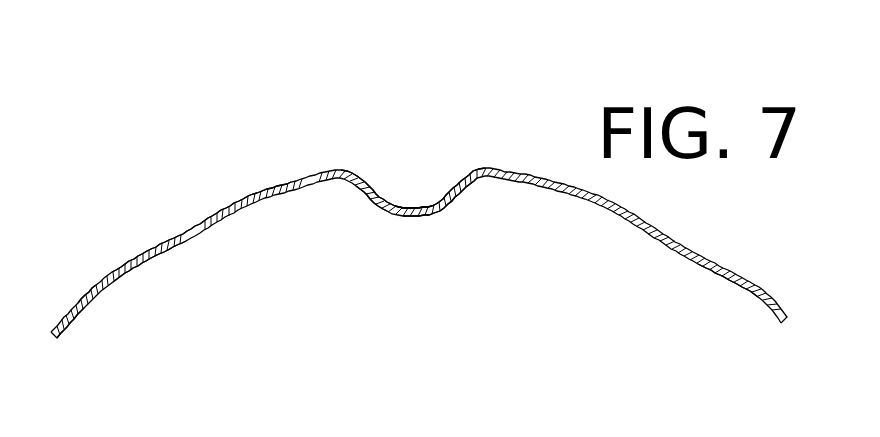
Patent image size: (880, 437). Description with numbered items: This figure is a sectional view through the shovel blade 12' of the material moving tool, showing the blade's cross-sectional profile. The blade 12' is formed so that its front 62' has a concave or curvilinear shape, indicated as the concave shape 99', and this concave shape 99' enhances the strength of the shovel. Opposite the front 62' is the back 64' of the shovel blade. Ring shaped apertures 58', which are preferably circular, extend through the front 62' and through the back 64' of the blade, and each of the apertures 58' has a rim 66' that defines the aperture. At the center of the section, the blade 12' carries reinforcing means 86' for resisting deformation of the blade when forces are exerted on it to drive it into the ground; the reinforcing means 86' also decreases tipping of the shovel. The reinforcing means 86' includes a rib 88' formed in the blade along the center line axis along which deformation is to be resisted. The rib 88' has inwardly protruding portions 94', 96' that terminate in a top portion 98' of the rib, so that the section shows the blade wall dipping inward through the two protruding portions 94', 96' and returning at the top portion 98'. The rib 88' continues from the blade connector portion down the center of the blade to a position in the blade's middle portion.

The shovel blade 12' is at (450, 246).
The ring shaped apertures 58' is at (175, 201).
The front of the shovel blade 62' is at (95, 359).
The back of the shovel blade 64' is at (59, 239).
The rim 66' is at (212, 273).
The reinforcing means 86' is at (435, 116).
The rib 88' is at (446, 266).
The inwardly protruding portion 94' is at (511, 256).
The inwardly protruding portion 96' is at (378, 255).
The top portion of the rib 98' is at (365, 116).
The concave shape 99' is at (678, 317).